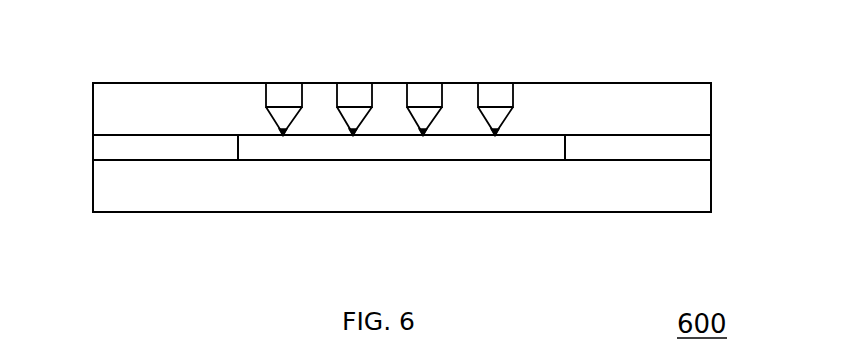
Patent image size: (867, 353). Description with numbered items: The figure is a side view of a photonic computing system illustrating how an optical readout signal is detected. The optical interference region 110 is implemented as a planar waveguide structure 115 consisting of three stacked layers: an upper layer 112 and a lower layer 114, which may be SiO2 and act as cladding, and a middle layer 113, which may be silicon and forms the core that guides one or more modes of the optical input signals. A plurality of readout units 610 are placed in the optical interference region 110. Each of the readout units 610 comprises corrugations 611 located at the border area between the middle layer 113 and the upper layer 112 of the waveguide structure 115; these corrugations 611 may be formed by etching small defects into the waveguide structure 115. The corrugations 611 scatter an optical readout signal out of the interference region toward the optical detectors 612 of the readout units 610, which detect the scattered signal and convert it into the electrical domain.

The planar waveguide structure 115 is at (62, 83).
The upper layer 112 is at (695, 104).
The middle layer 113 is at (700, 151).
The lower layer 114 is at (700, 181).
The optical interference region 110 is at (467, 148).
The readout units 610 is at (378, 70).
The corrugations 611 is at (283, 136).
The optical detectors 612 is at (521, 61).